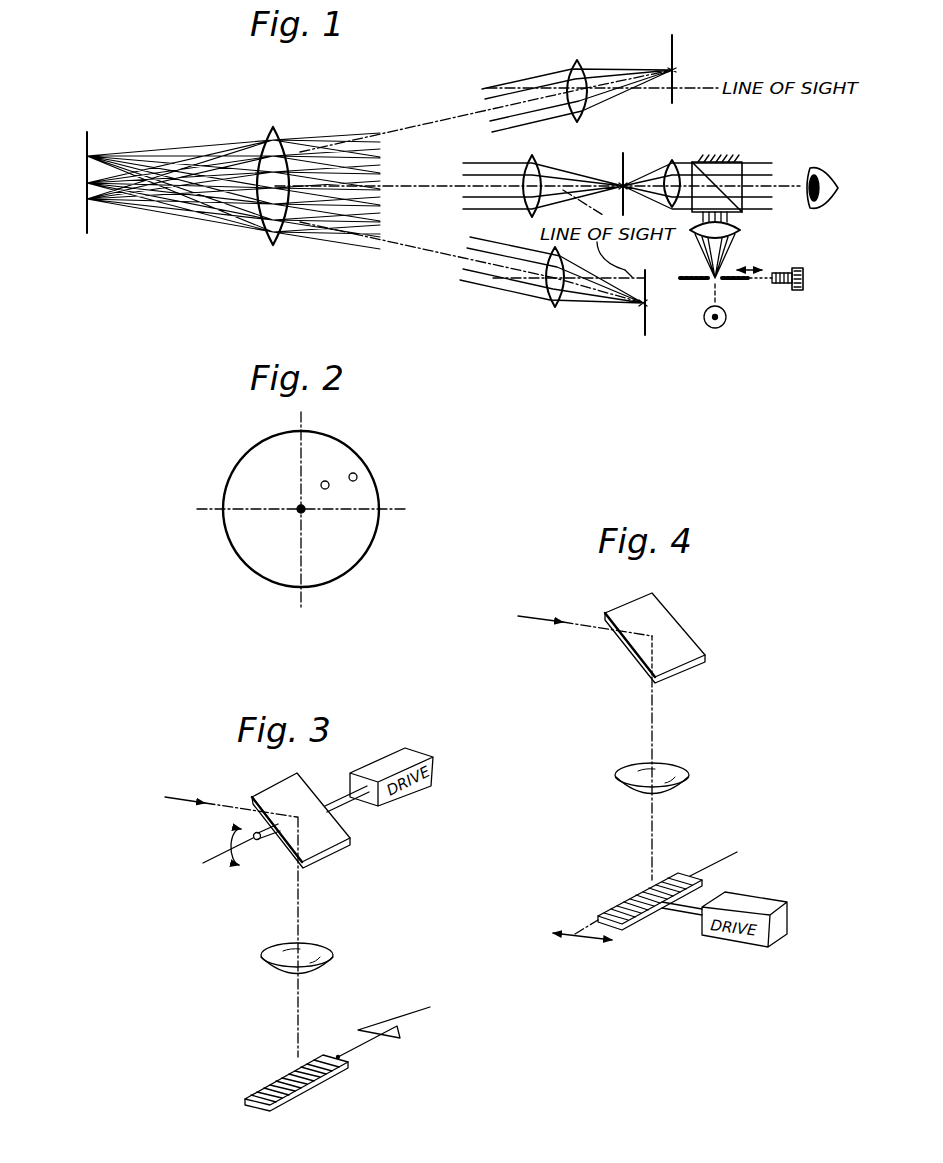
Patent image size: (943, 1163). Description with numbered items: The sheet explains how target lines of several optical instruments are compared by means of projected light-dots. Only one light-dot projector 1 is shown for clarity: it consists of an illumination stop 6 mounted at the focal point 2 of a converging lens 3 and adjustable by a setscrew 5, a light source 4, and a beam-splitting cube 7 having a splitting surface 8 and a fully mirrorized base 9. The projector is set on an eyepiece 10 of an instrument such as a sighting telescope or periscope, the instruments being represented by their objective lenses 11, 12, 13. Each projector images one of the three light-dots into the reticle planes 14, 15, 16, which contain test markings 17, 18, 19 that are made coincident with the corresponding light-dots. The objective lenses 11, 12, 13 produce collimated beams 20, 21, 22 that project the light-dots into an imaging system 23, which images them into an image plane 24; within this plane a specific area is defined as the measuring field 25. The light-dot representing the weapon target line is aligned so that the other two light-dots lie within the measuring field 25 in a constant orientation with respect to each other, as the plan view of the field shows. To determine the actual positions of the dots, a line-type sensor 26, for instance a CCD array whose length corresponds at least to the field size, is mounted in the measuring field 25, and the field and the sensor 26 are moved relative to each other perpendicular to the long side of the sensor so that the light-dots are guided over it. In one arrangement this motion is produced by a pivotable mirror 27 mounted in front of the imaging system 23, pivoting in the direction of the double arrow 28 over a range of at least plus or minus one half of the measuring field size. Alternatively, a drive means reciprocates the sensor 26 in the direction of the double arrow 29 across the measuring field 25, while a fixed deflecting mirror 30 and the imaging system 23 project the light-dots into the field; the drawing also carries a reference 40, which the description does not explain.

In FIG. 1, the light-dot projector 1 is at (770, 222).
In FIG. 1, the focal point 2 is at (712, 282).
In FIG. 1, the converging lens 3 is at (692, 232).
In FIG. 1, the light source 4 is at (715, 329).
In FIG. 1, the adjusting screw 5 is at (806, 278).
In FIG. 1, the illumination stop 6 is at (735, 283).
In FIG. 1, the beam-splitting cube 7 is at (743, 172).
In FIG. 1, the splitting surface 8 is at (739, 162).
In FIG. 1, the fully mirrorized base 9 is at (709, 157).
In FIG. 1, the eyepiece 10 is at (672, 160).
In FIG. 1, the objective lens 11 is at (577, 60).
In FIG. 1, the objective lens 12 is at (536, 160).
In FIG. 1, the objective lens 13 is at (555, 308).
In FIG. 1, the reticle plane 14 is at (674, 47).
In FIG. 1, the reticle plane 15 is at (623, 155).
In FIG. 1, the reticle plane 16 is at (645, 336).
In FIG. 1, the test marking 17 is at (672, 70).
In FIG. 1, the test marking 18 is at (621, 183).
In FIG. 1, the test marking 19 is at (640, 305).
In FIG. 1, the collimated beam 20 is at (505, 83).
In FIG. 1, the collimated beam 21 is at (488, 166).
In FIG. 1, the collimated beam 22 is at (476, 292).
In FIG. 1, the imaging system 23 is at (273, 127).
In FIG. 3, the imaging system 23 is at (326, 957).
In FIG. 4, the imaging system 23 is at (672, 781).
In FIG. 1, the image plane 24 is at (87, 132).
In FIG. 3, the image plane 24 is at (296, 1082).
In FIG. 4, the image plane 24 is at (662, 916).
In FIG. 2, the measuring field 25 is at (337, 555).
In FIG. 3, the line-type sensor 26 is at (326, 1083).
In FIG. 4, the line-type sensor 26 is at (648, 915).
In FIG. 3, the pivotable mirror 27 is at (318, 838).
In FIG. 3, the double arrow 28 is at (230, 858).
In FIG. 4, the double arrow 29 is at (590, 946).
In FIG. 4, the fixed deflecting mirror 30 is at (676, 656).
In FIG. 3, the light direction arrow 40 is at (402, 1034).